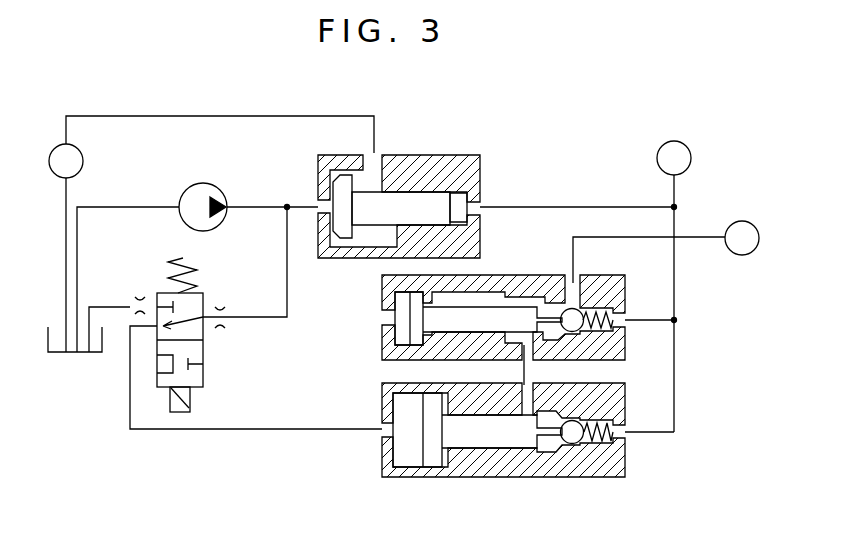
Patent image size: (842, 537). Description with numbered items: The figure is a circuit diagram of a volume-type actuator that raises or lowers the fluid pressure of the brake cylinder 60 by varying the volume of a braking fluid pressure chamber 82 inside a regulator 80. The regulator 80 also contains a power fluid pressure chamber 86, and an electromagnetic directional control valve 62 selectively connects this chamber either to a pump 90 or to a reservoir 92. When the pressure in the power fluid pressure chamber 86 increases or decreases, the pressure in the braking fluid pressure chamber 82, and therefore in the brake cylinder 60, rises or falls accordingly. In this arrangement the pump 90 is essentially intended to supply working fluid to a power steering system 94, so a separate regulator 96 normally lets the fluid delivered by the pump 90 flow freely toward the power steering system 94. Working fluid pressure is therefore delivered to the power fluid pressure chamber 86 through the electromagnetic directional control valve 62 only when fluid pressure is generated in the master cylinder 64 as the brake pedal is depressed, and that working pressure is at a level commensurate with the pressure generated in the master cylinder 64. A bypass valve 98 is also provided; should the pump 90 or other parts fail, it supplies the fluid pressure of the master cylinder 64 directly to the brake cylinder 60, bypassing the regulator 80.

The power steering system 94 is at (83, 163).
The pump 90 is at (203, 183).
The regulator 96 is at (440, 155).
The master cylinder 64 is at (674, 141).
The brake cylinder 60 is at (742, 221).
The electromagnetic directional control valve 62 is at (204, 357).
The reservoir 92 is at (77, 355).
The bypass valve 98 is at (402, 360).
The power fluid pressure chamber 86 is at (410, 457).
The regulator 80 is at (483, 470).
The braking fluid pressure chamber 82 is at (543, 450).